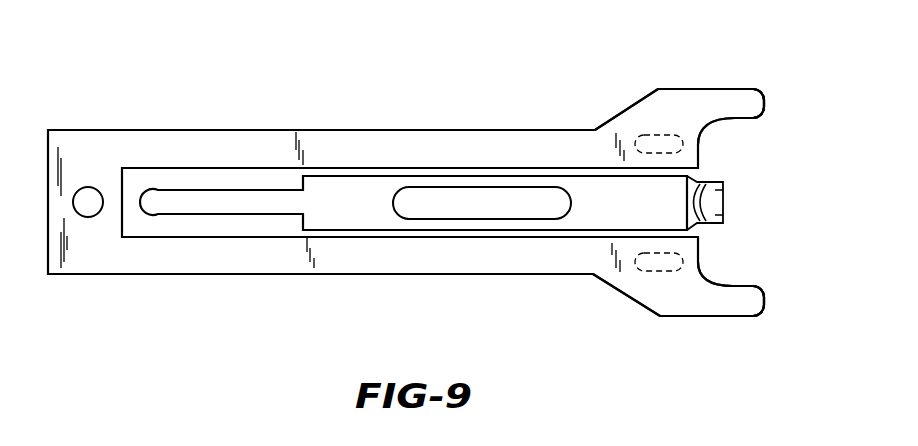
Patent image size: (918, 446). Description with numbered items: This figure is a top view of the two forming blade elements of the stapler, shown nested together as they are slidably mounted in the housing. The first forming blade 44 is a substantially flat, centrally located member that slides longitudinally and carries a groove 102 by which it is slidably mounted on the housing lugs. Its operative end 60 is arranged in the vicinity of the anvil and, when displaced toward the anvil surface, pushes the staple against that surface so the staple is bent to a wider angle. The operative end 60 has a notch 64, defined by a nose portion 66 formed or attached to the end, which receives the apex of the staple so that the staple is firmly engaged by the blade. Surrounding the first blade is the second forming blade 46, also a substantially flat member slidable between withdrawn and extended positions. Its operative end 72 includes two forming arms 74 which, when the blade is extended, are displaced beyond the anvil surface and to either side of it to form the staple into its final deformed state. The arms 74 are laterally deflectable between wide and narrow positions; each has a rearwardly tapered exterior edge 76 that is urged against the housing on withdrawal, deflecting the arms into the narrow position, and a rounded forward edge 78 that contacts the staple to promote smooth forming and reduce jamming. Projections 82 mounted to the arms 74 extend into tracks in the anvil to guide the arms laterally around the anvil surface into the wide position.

The second forming blade 46 is at (287, 109).
The first forming blade 44 is at (411, 233).
The groove 102 is at (468, 195).
The operative end 60 is at (754, 131).
The operative end 72 is at (733, 357).
The forming arms 74 is at (733, 98).
The rearwardly tapered exterior edge 76 is at (617, 115).
The forward edges 78 is at (765, 103).
The projections 82 is at (646, 140).
The notch 64 is at (710, 183).
The nose portion 66 is at (720, 203).